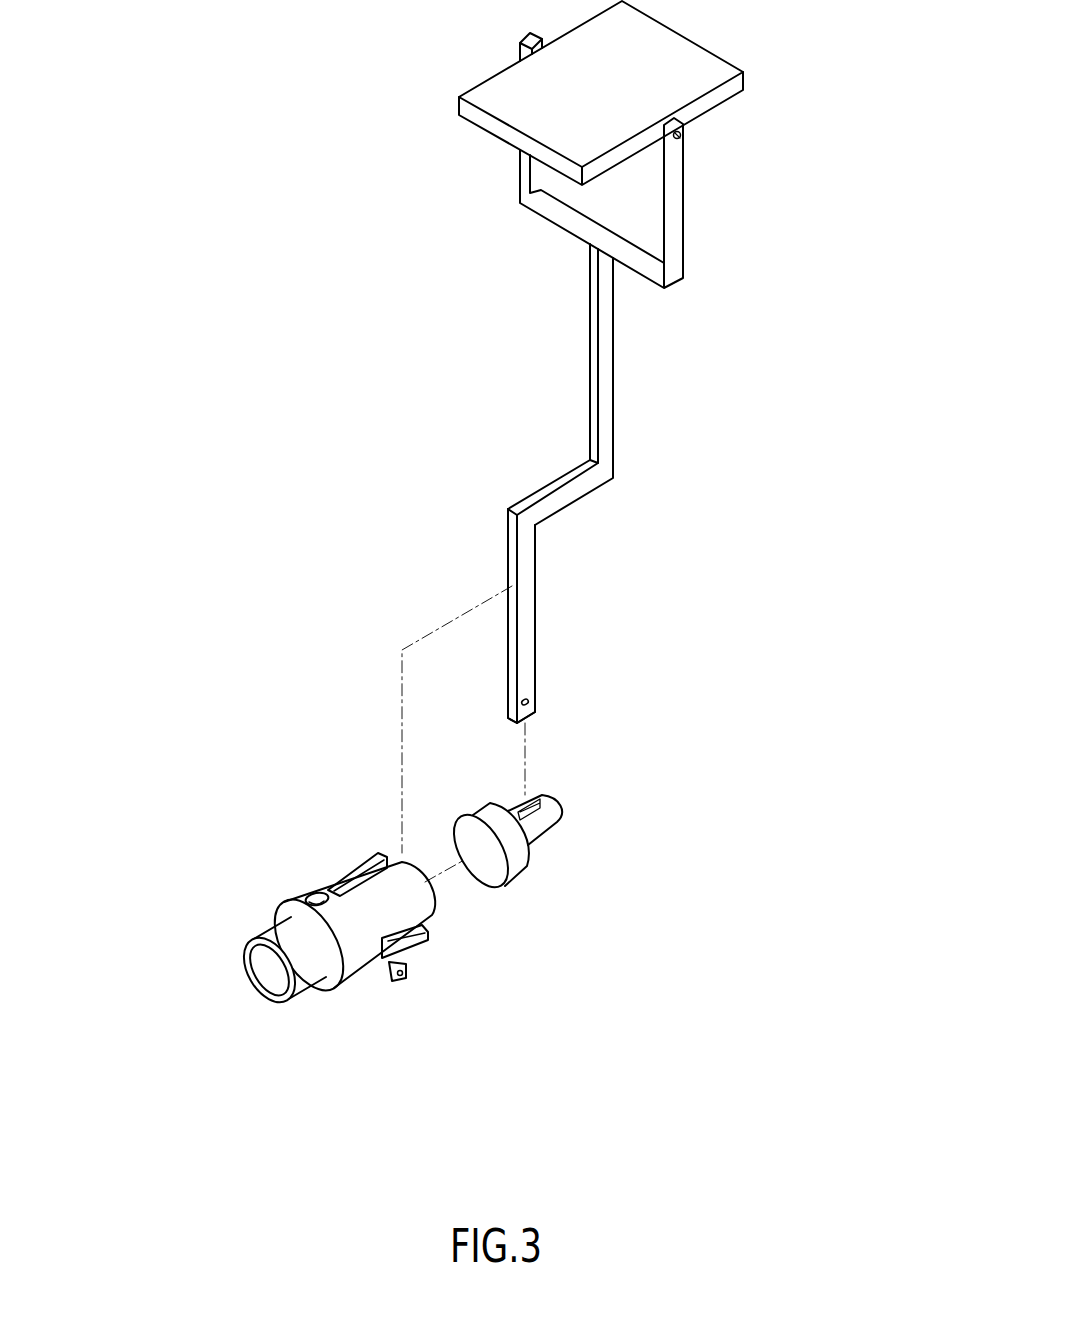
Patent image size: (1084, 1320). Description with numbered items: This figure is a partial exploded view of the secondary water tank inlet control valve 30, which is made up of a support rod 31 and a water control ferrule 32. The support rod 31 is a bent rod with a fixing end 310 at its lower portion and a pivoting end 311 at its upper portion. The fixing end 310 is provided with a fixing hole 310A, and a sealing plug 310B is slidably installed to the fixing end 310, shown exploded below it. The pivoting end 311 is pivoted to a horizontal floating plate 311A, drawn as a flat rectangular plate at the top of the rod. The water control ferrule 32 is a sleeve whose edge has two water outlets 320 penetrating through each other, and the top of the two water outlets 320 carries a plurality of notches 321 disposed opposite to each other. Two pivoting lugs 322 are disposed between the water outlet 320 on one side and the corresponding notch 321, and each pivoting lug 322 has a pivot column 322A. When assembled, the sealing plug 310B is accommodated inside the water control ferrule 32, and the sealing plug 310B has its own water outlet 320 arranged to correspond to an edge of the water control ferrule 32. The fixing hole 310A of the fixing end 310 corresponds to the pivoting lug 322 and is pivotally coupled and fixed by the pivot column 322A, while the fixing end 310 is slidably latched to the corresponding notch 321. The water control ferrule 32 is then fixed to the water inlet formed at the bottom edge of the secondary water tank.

The secondary water tank inlet control valve 30 is at (698, 397).
The support rod 31 is at (603, 358).
The fixing end 310 is at (528, 539).
The fixing hole 310A is at (530, 702).
The sealing plug 310B is at (538, 828).
The pivoting end 311 is at (675, 208).
The horizontal floating plate 311A is at (630, 53).
The water control ferrule 32 is at (296, 903).
The water outlet 320 is at (312, 896).
The notch 321 is at (400, 940).
The pivoting lug 322 is at (386, 968).
The pivot column 322A is at (399, 977).